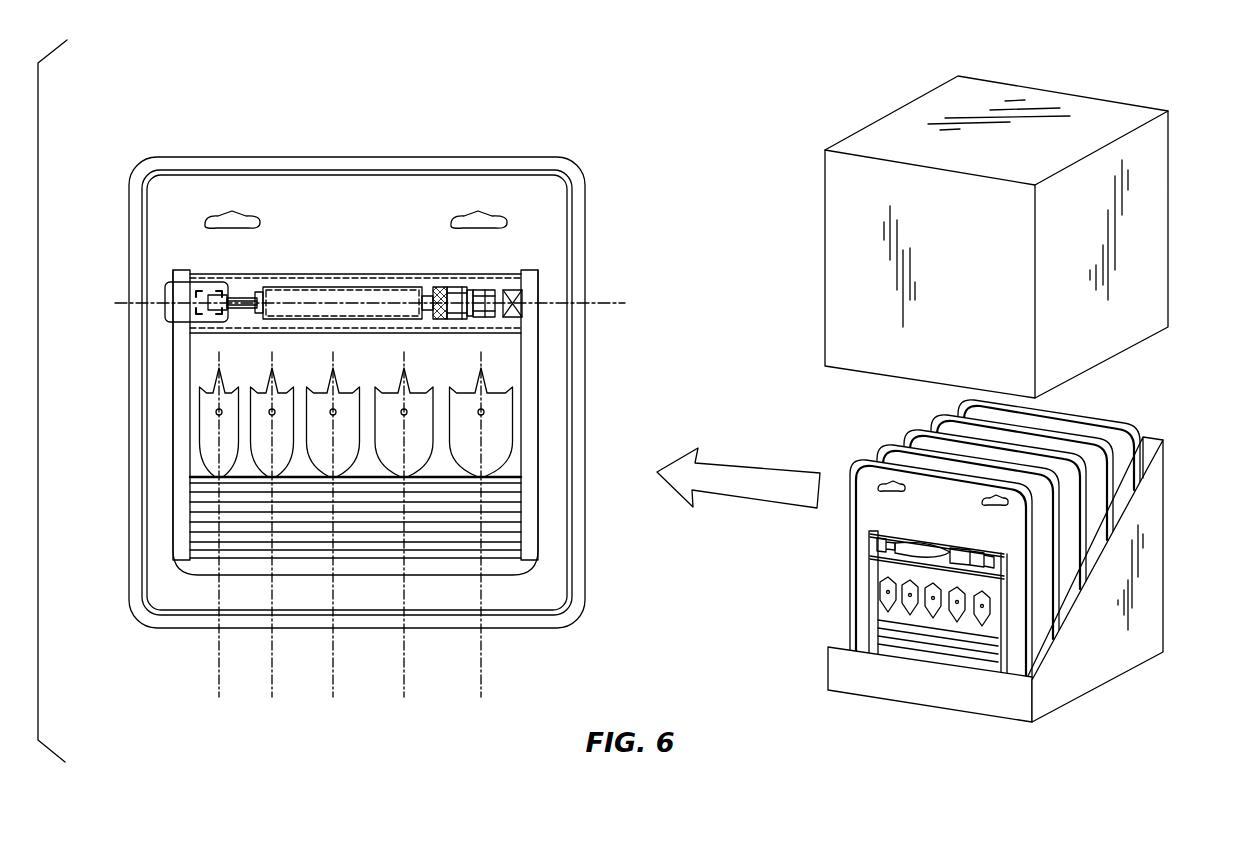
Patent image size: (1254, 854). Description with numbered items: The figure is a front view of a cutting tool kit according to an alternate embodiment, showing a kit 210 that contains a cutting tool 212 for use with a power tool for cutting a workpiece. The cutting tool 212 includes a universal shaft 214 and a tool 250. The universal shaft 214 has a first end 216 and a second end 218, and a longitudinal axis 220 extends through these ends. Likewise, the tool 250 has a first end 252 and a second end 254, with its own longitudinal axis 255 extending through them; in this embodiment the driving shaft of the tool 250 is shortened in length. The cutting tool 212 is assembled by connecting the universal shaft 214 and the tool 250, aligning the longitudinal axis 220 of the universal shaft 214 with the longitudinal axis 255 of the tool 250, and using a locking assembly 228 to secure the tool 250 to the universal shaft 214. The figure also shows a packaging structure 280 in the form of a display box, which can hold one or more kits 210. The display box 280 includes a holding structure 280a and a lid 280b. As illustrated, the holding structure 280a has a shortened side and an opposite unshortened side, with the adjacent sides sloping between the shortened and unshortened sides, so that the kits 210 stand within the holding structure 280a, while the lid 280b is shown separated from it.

The kit 210 is at (133, 633).
The cutting tool 212 is at (173, 455).
The universal shaft 214 is at (457, 294).
The first end 216 is at (246, 292).
The second end 218 is at (487, 314).
The longitudinal axis 220 is at (598, 300).
The locking assembly 228 is at (470, 287).
The tool 250 is at (330, 411).
The first end 252 is at (494, 467).
The second end 254 is at (492, 392).
The longitudinal axis 255 is at (479, 670).
The packaging structure 280 is at (1041, 576).
The holding structure 280a is at (1041, 561).
The lid 280b is at (1150, 266).